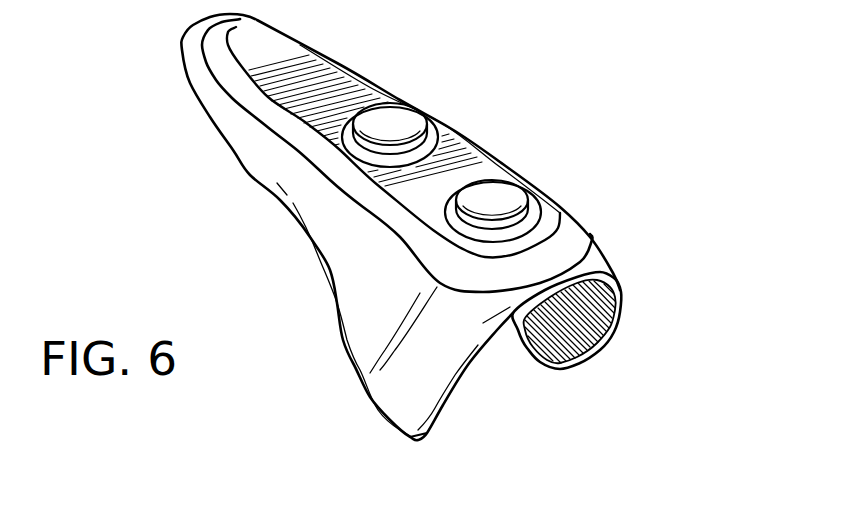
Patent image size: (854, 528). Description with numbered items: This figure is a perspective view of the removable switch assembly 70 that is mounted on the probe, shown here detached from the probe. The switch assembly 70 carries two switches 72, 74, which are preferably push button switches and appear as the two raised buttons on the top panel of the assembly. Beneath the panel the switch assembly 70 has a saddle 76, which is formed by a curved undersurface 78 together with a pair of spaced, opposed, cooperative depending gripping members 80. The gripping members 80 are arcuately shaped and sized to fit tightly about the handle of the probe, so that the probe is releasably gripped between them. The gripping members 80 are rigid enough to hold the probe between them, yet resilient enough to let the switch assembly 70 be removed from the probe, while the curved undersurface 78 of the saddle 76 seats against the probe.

The switch assembly 70 is at (232, 150).
The switch 72 is at (503, 200).
The switch 74 is at (400, 118).
The saddle 76 is at (343, 258).
The curved undersurface 78 is at (520, 328).
The gripping members 80 is at (393, 394).